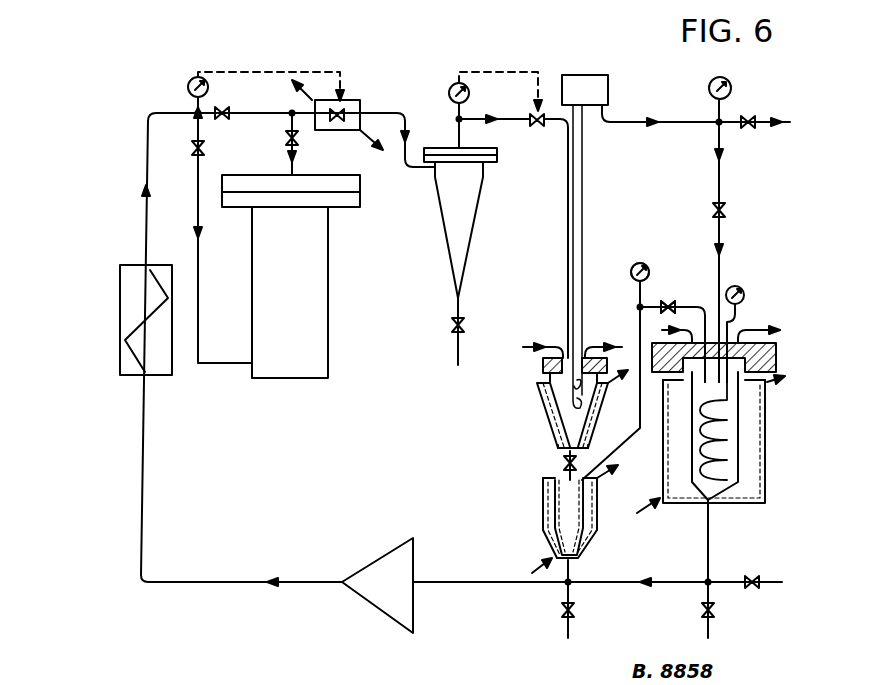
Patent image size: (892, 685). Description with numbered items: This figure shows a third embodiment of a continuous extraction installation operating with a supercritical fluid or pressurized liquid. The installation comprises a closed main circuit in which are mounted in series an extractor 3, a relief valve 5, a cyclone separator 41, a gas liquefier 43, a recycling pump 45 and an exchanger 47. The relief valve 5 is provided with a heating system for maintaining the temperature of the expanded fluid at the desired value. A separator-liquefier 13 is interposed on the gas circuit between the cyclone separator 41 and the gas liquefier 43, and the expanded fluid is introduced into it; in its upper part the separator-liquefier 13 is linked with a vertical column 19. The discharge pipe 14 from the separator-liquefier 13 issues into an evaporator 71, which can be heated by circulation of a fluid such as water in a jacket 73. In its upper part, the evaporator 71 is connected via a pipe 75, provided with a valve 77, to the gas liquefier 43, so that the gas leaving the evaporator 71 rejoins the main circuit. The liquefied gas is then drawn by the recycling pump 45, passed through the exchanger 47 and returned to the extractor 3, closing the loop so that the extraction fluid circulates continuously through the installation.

The extractor 3 is at (290, 345).
The relief valve 5 is at (368, 100).
The separator-liquefier 13 is at (520, 374).
The discharge pipe 14 is at (546, 455).
The vertical column 19 is at (578, 203).
The cyclone separator 41 is at (457, 237).
The gas liquefier 43 is at (767, 482).
The recycling pump 45 is at (378, 575).
The exchanger 47 is at (165, 360).
The evaporator 71 is at (555, 500).
The jacket 73 is at (548, 522).
The pipe 75 is at (638, 320).
The valve 77 is at (669, 300).